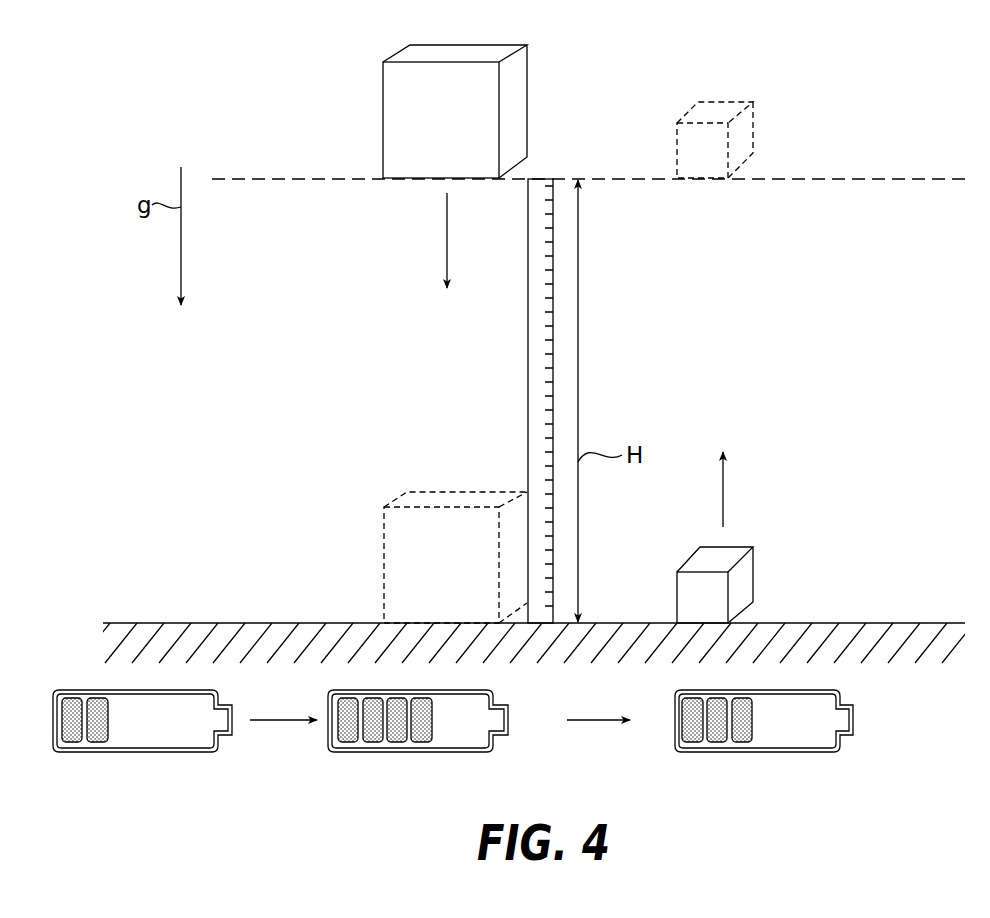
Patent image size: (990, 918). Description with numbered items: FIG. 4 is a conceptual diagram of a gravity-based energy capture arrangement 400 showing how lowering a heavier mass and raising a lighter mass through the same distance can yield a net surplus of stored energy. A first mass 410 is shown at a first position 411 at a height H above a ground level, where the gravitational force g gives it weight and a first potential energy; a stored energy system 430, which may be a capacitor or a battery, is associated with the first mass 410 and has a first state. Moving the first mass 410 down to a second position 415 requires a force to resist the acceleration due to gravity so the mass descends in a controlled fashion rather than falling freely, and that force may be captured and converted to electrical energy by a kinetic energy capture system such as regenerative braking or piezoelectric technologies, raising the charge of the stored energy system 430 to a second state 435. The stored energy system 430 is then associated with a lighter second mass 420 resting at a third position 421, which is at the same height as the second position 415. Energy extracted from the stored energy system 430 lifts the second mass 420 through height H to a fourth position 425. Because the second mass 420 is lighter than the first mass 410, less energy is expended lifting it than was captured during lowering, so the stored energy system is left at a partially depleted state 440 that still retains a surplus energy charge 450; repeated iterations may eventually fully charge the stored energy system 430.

The gravity energy storage system 400 is at (855, 373).
The first mass 410 is at (397, 132).
The first position 411 is at (387, 187).
The second position 415 is at (370, 618).
The second mass 420 is at (747, 122).
The third position 421 is at (716, 627).
The fourth position 425 is at (710, 181).
The stored energy system 430 is at (160, 738).
The second state 435 is at (457, 742).
The battery at partial charge 440 is at (765, 763).
The surplus energy charge 450 is at (728, 754).